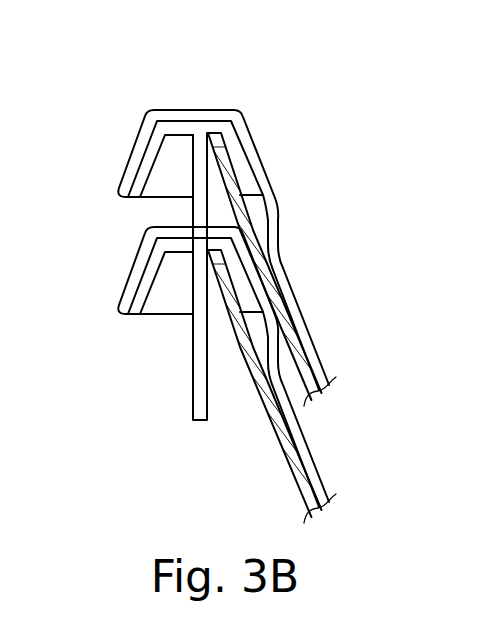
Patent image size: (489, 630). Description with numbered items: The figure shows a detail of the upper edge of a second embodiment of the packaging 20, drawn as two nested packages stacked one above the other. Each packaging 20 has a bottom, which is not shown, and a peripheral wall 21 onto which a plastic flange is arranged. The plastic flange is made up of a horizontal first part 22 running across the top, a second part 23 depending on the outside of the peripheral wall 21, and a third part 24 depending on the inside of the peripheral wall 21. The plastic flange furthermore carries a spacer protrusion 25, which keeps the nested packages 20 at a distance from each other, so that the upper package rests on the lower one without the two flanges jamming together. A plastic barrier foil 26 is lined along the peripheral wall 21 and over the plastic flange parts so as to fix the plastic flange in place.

The packaging 20 is at (252, 276).
The peripheral wall 21 is at (274, 303).
The horizontal first part 22 is at (173, 130).
The second part 23 is at (148, 157).
The third part 24 is at (232, 152).
The spacer protrusion 25 is at (198, 170).
The plastic barrier foil 26 is at (272, 243).